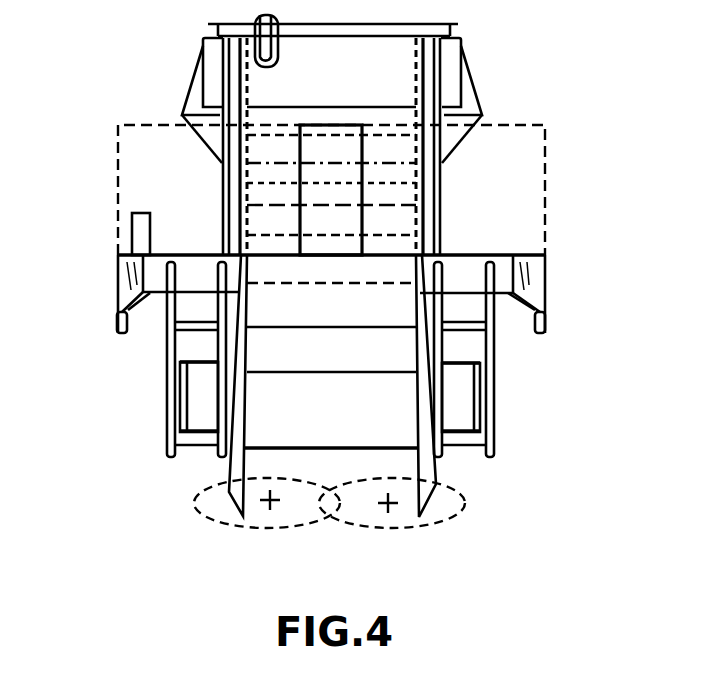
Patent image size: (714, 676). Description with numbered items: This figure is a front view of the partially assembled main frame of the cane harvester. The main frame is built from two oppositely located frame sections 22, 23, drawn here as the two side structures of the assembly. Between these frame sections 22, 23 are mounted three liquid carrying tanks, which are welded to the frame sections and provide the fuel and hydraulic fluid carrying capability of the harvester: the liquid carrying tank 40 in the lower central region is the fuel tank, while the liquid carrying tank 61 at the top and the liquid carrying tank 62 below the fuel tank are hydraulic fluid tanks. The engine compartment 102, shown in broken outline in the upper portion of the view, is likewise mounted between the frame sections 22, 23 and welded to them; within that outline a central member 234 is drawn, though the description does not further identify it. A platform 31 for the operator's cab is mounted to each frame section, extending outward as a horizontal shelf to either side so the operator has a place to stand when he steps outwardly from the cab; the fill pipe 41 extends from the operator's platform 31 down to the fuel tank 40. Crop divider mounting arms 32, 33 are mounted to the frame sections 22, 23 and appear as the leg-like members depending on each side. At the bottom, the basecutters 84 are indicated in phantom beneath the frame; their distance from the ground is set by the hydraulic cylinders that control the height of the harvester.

The liquid carrying tank 61 is at (348, 81).
The discharge chute 234 is at (408, 208).
The engine compartment 102 is at (548, 182).
The platform 31 is at (160, 255).
The fill pipe 41 is at (132, 236).
The liquid carrying tank 40 is at (350, 363).
The liquid carrying tank 62 is at (285, 452).
The frame section 23 is at (243, 357).
The frame section 22 is at (422, 345).
The crop divider mounting arm 33 is at (168, 432).
The crop divider mounting arm 32 is at (496, 398).
The basecutter 84 is at (230, 524).